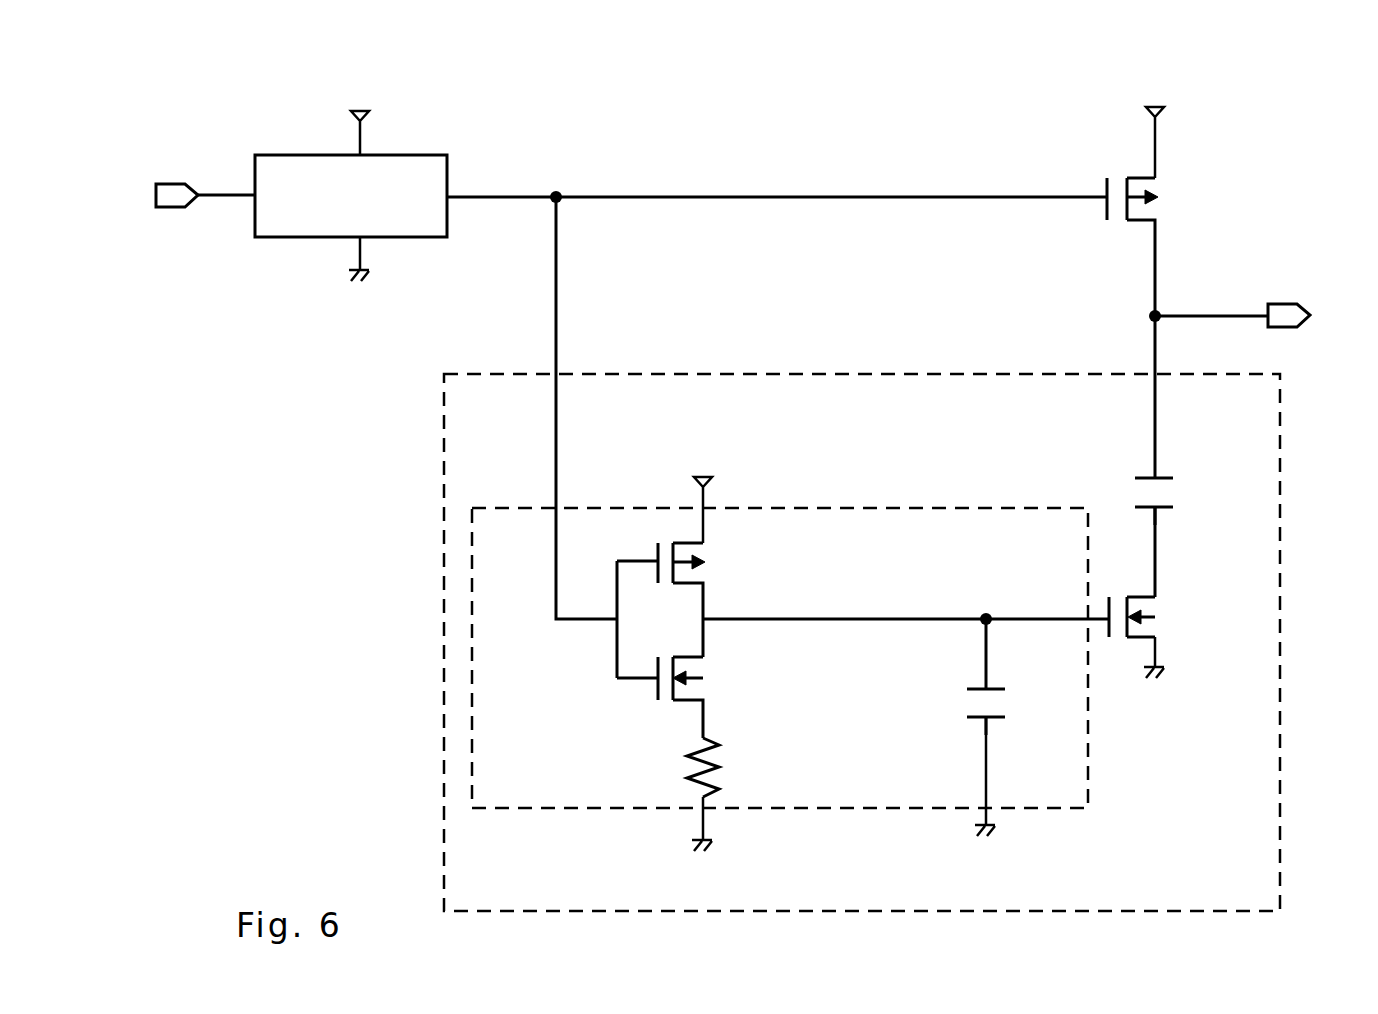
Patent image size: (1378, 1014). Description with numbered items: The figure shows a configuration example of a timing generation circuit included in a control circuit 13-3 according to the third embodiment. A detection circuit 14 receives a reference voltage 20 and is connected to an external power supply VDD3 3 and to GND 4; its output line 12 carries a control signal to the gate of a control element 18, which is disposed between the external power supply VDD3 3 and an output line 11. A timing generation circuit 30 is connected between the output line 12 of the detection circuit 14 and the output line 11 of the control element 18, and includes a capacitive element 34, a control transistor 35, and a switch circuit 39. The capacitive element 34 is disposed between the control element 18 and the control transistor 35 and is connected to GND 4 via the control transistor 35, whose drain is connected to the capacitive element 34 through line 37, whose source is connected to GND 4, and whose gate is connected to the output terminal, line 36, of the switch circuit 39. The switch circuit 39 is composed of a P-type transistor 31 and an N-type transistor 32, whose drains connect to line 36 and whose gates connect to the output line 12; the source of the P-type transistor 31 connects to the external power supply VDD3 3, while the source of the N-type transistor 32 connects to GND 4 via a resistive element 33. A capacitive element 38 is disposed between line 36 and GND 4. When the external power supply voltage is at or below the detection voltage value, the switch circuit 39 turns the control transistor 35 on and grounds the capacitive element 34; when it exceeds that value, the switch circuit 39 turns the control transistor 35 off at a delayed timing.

The external power supply VDD3 3 is at (357, 110).
The GND 4 is at (366, 280).
The output line of the control element 11 is at (1233, 316).
The output line of the detection circuit 12 is at (553, 565).
The control circuit 13-3 is at (1355, 98).
The detection circuit 14 is at (440, 155).
The control element 18 is at (1160, 190).
The reference voltage 20 is at (172, 184).
The timing generation circuit 30 is at (443, 440).
The P-type transistor 31 is at (708, 578).
The N-type transistor 32 is at (708, 690).
The resistive element 33 is at (716, 782).
The capacitive element 34 is at (1166, 500).
The control transistor 35 is at (1158, 630).
The line 36 is at (825, 619).
The line 37 is at (1157, 566).
The capacitive element 38 is at (992, 689).
The switch circuit 39 is at (880, 508).